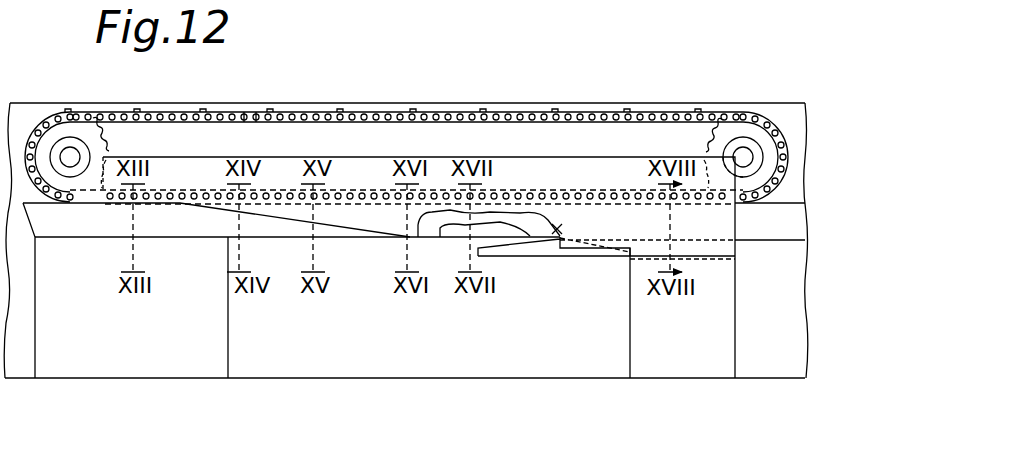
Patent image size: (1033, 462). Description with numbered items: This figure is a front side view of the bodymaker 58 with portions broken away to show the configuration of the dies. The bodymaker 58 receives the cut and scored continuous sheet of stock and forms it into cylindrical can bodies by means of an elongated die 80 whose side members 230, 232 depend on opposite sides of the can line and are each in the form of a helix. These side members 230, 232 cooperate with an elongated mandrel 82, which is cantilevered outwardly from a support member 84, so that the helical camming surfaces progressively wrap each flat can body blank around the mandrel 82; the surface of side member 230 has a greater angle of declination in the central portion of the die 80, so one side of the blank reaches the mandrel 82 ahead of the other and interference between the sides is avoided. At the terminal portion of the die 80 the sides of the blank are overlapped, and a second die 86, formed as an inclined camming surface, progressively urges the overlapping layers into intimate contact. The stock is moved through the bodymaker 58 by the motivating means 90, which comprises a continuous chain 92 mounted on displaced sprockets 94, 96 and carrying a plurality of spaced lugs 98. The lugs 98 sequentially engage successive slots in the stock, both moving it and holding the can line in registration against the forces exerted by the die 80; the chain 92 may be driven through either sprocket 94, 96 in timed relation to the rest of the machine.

The bodymaker 58 is at (170, 358).
The elongated die 80 is at (597, 153).
The elongated mandrel 82 is at (98, 230).
The support member 84 is at (37, 344).
The second die 86 is at (553, 257).
The motivating means 90 is at (312, 112).
The continuous chain 92 is at (252, 111).
The sprocket 94 is at (105, 156).
The sprocket 96 is at (750, 134).
The lugs 98 is at (339, 111).
The side member 230 is at (455, 238).
The side member 232 is at (557, 229).